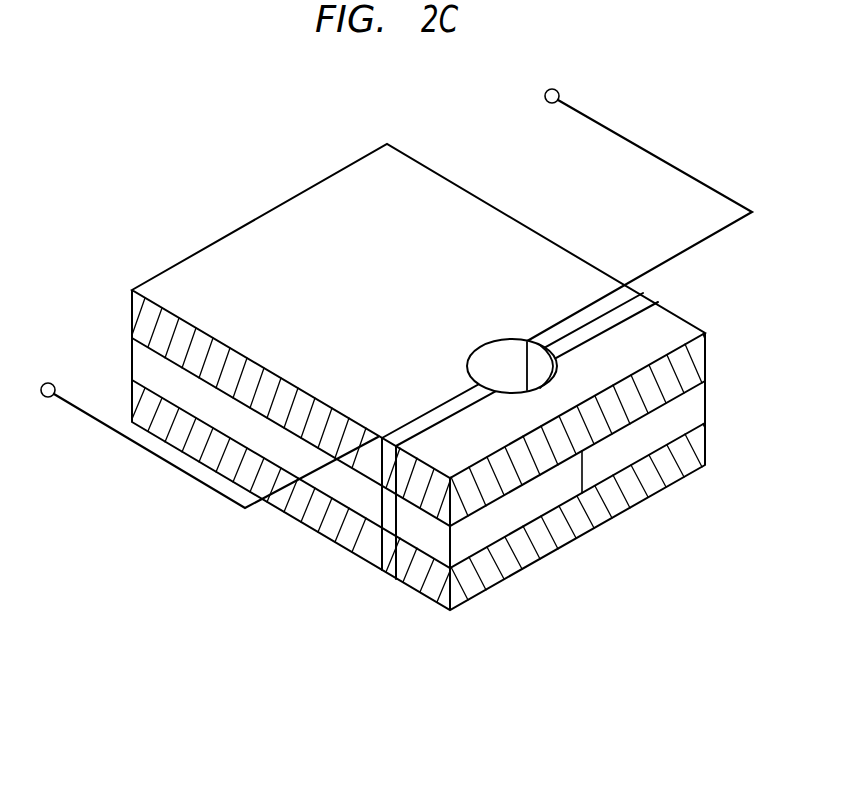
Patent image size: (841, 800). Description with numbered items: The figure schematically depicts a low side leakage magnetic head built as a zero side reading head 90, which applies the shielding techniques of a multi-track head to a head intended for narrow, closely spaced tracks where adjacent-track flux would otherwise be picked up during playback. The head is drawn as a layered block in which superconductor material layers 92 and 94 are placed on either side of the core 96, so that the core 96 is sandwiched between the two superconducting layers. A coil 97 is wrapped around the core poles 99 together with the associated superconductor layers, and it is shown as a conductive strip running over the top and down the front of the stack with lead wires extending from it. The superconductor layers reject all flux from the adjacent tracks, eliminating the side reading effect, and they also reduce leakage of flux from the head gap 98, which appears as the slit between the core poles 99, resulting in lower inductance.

The zero side reading head 90 is at (400, 365).
The superconductor material layer 92 is at (140, 314).
The superconductor material layer 94 is at (140, 401).
The core 96 is at (707, 408).
The coil 97 is at (402, 412).
The head gap 98 is at (583, 488).
The core poles 99 is at (444, 484).